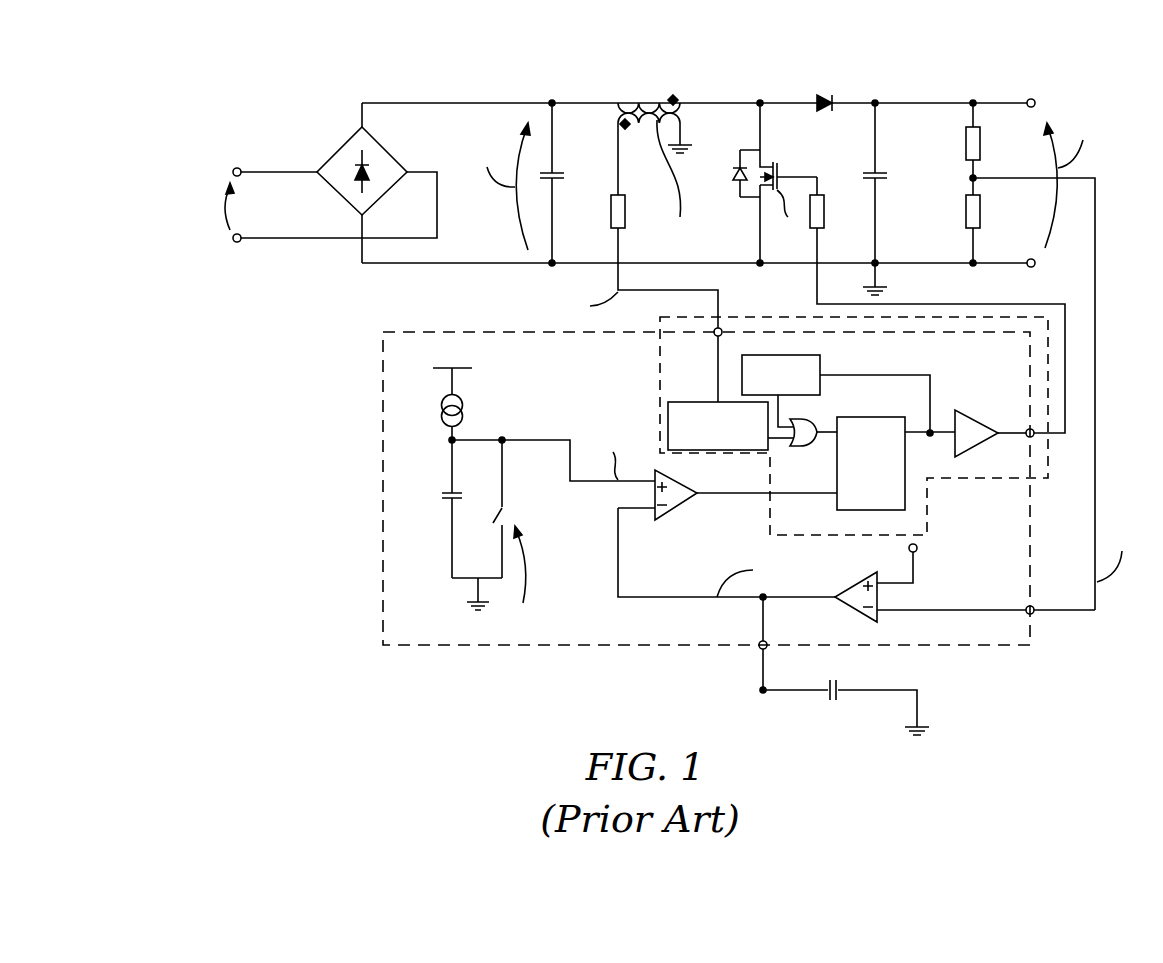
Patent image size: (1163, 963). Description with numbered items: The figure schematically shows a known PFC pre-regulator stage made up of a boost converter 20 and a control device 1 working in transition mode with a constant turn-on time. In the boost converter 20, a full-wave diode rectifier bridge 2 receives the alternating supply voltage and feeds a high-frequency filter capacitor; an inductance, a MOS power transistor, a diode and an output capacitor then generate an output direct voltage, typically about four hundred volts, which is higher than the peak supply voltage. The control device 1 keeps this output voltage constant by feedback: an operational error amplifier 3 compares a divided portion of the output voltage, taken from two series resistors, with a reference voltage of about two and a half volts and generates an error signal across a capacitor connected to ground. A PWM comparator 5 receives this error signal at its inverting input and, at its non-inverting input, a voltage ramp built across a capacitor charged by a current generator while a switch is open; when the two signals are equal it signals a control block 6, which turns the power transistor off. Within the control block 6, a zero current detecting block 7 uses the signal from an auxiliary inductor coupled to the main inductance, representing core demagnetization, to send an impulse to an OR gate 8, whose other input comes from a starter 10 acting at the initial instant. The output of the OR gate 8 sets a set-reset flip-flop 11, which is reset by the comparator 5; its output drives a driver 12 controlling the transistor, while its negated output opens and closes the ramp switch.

The boost converter 20 is at (530, 62).
The full-wave diode rectifier bridge 2 is at (333, 158).
The control device 1 is at (382, 383).
The control block 6 is at (1048, 377).
The zero current detecting block 7 is at (680, 401).
The starter 10 is at (780, 355).
The OR gate 8 is at (798, 446).
The set-reset flip-flop 11 is at (873, 417).
The driver 12 is at (977, 432).
The PWM comparator 5 is at (678, 508).
The operational error amplifier 3 is at (850, 607).